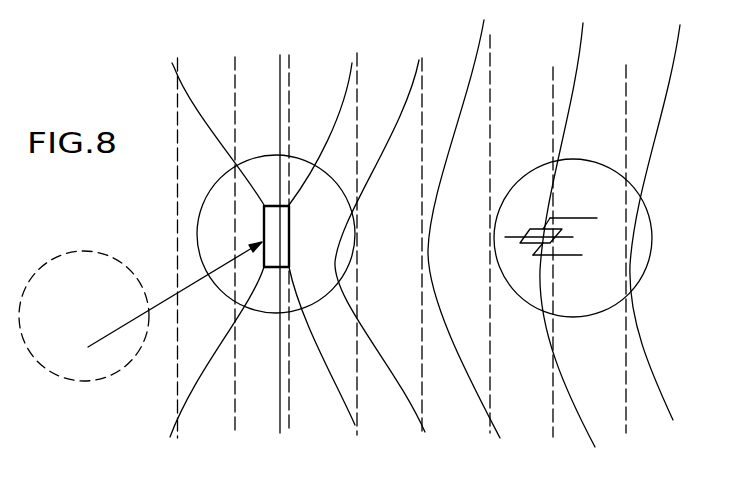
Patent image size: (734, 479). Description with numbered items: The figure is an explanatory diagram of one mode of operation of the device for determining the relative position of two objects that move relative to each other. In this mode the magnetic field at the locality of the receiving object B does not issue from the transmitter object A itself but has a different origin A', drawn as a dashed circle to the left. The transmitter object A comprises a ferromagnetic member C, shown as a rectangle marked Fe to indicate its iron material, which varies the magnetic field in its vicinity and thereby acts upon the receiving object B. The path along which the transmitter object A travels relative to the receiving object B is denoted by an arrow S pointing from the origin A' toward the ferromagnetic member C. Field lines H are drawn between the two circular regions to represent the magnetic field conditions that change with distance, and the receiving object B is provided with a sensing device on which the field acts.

The transmitter object A is at (262, 250).
The origin of the magnetic field A' is at (84, 304).
The receiving object B is at (656, 228).
The ferromagnetic member C is at (290, 218).
The iron core material Fe is at (276, 242).
The arrow denoting path S is at (205, 284).
The magnetic field line H is at (464, 238).